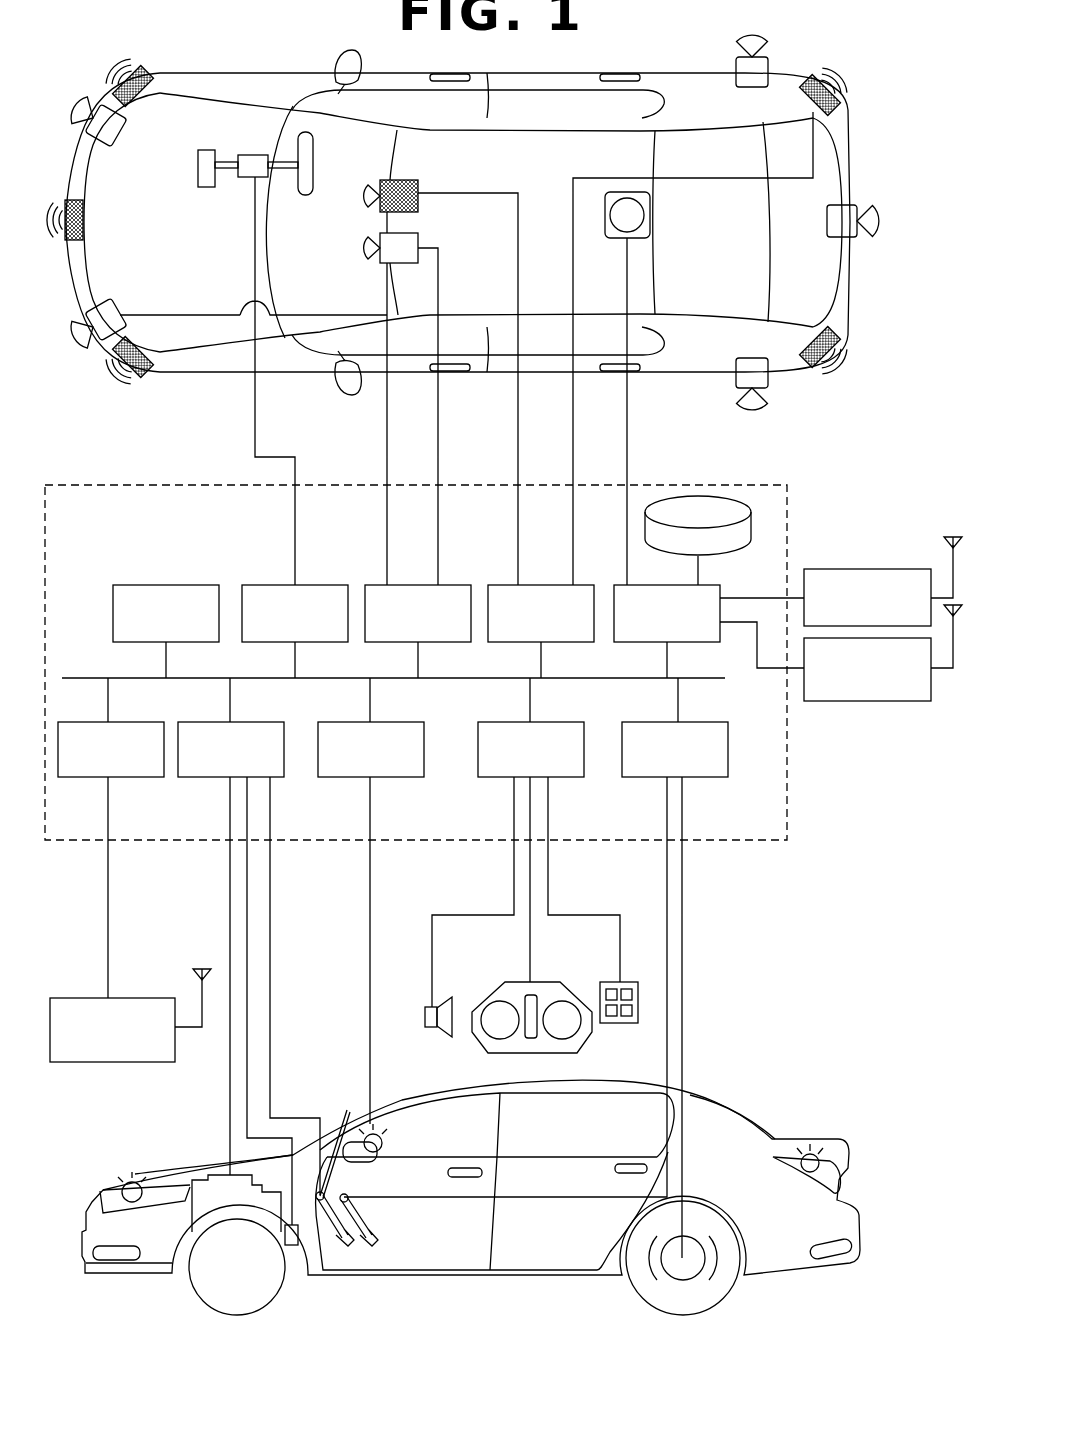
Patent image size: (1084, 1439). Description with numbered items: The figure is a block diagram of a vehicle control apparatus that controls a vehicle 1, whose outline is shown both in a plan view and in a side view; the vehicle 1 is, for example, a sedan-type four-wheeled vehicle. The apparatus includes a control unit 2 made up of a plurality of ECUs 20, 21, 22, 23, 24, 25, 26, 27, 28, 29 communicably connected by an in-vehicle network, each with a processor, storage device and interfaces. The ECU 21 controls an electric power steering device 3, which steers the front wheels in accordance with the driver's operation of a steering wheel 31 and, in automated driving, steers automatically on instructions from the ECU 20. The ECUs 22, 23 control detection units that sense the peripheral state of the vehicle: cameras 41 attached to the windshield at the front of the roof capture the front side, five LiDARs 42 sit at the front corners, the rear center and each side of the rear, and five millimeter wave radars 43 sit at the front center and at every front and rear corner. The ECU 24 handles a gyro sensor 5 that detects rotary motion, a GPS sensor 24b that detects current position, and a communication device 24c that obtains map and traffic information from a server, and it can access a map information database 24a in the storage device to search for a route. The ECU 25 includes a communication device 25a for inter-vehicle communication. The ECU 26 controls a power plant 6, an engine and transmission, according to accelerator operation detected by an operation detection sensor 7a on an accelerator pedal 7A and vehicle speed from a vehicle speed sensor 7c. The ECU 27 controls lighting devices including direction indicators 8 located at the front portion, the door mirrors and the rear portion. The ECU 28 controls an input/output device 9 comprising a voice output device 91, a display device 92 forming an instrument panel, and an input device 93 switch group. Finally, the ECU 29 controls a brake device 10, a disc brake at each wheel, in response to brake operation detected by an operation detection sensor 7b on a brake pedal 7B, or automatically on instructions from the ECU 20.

The vehicle 1 is at (860, 130).
The control unit 2 is at (756, 842).
The electric power steering device 3 is at (207, 190).
The steering wheel 31 is at (305, 198).
The camera 41 is at (420, 207).
The LiDAR 42 is at (112, 150).
The millimeter wave radar 43 is at (136, 104).
The gyro sensor 5 is at (652, 215).
The ECU 20 is at (205, 584).
The ECU 21 is at (335, 584).
The ECU 22 is at (426, 584).
The ECU 23 is at (548, 584).
The ECU 24 is at (615, 584).
The map information database 24a is at (698, 496).
The GPS sensor 24b is at (912, 569).
The communication device 24c is at (905, 702).
The ECU 25 is at (140, 778).
The communication device 25a is at (102, 1063).
The ECU 26 is at (208, 778).
The ECU 27 is at (405, 778).
The ECU 28 is at (568, 778).
The ECU 29 is at (712, 778).
The power plant 6 is at (200, 1172).
The operation detection sensor 7a is at (338, 1135).
The accelerator pedal 7A is at (350, 1243).
The operation detection sensor 7b is at (348, 1199).
The brake pedal 7B is at (377, 1243).
The vehicle speed sensor 7c is at (292, 1247).
The direction indicators 8 is at (120, 1188).
The input/output device 9 is at (519, 1025).
The voice output device 91 is at (425, 1012).
The display device 92 is at (490, 998).
The input device 93 is at (620, 1024).
The brake device 10 is at (684, 1282).